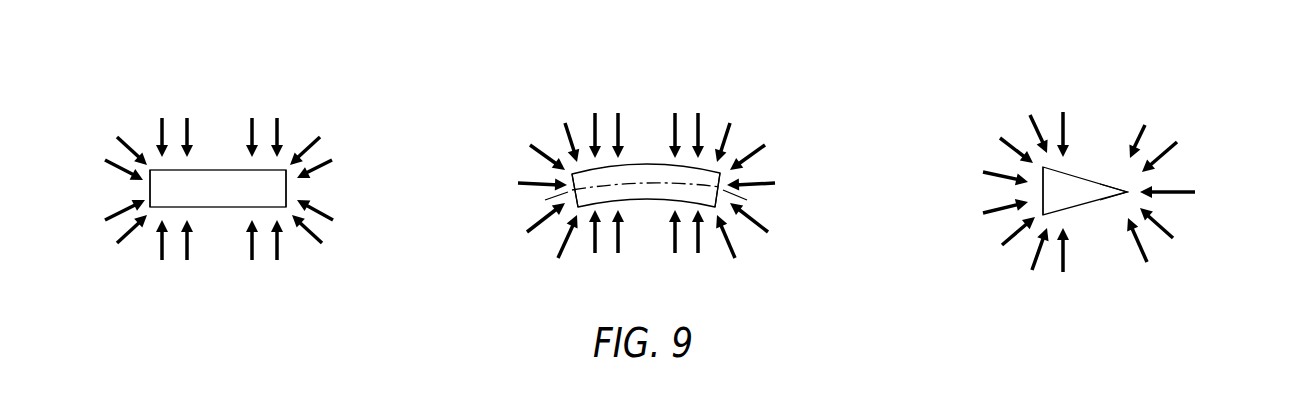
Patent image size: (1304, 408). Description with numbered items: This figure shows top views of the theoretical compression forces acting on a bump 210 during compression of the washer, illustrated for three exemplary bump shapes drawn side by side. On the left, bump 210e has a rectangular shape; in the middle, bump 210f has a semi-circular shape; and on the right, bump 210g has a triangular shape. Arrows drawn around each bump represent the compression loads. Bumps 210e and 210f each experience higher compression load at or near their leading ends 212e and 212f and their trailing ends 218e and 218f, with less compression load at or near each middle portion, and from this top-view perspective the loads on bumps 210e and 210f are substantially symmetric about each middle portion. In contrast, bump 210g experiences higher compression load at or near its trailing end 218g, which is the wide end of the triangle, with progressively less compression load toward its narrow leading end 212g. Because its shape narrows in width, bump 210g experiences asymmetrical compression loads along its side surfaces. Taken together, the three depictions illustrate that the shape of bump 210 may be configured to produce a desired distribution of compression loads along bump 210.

The bump 210 is at (130, 110).
The bump 210e is at (285, 167).
The trailing end 218e is at (150, 188).
The leading end 212e is at (287, 190).
The bump 210f is at (722, 170).
The trailing end 218f is at (568, 175).
The leading end 212f is at (722, 180).
The bump 210g is at (1122, 187).
The trailing end 218g is at (1043, 177).
The leading end 212g is at (1130, 192).